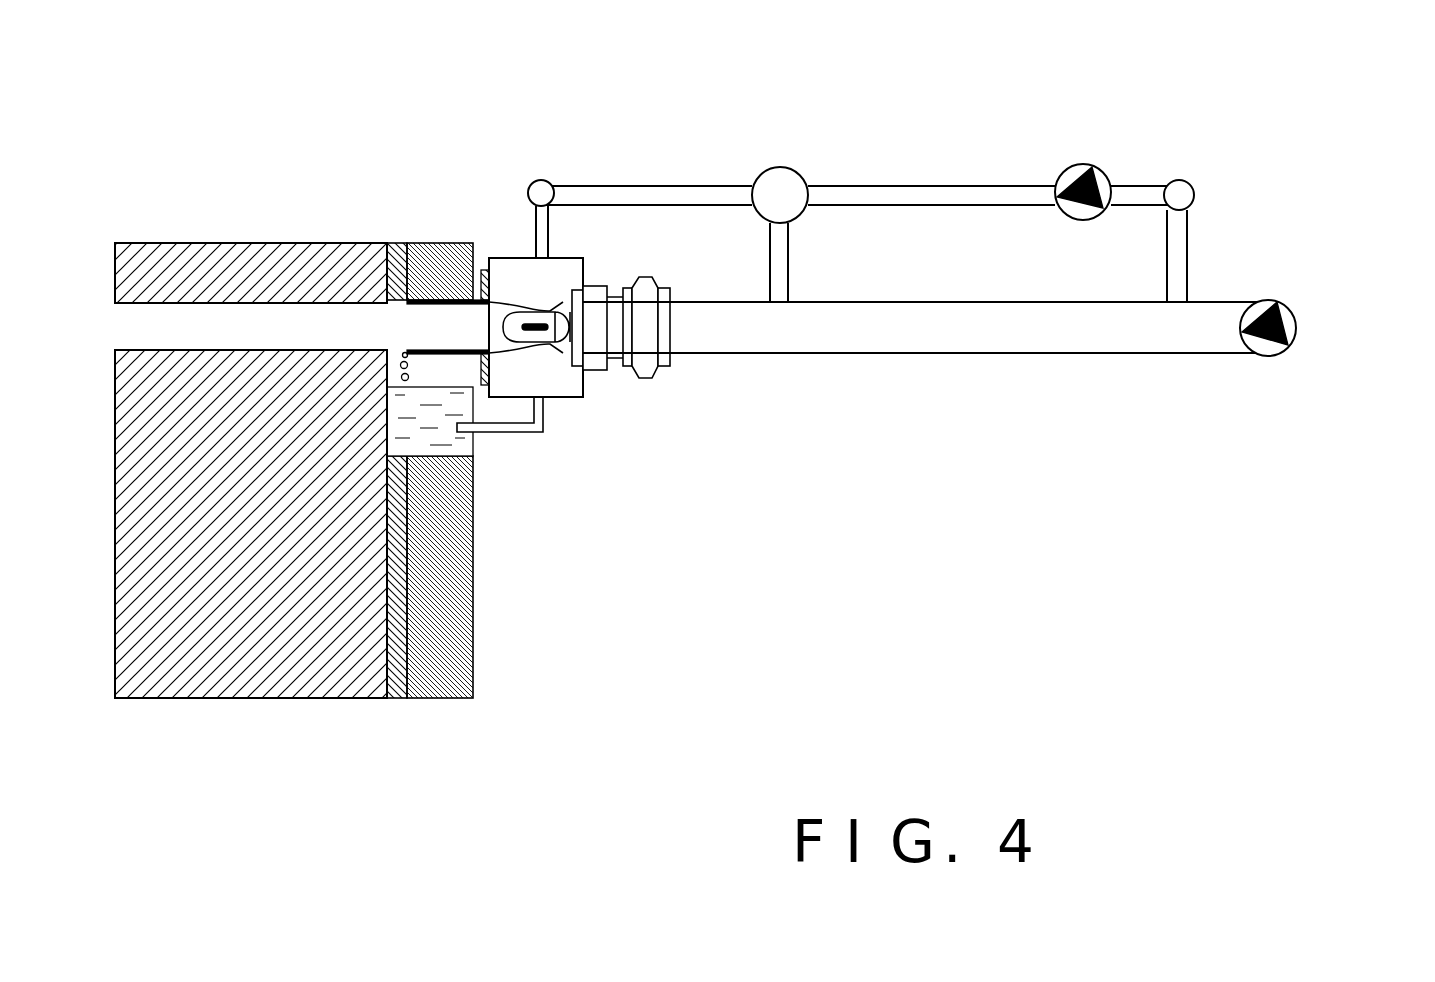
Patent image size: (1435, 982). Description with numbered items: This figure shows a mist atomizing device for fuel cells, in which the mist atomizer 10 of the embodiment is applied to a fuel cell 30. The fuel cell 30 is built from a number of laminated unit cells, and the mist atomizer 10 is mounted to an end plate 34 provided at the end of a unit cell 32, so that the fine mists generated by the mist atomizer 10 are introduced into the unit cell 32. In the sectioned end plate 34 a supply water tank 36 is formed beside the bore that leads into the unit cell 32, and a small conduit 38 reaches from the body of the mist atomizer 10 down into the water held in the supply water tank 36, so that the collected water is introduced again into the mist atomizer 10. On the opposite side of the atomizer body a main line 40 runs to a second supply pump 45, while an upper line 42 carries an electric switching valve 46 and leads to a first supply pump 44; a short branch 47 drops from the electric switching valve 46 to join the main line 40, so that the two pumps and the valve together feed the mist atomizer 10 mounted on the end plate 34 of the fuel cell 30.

The mist atomizer 10 is at (648, 390).
The fuel cell 30 is at (372, 544).
The unit cell 32 is at (338, 683).
The end plate 34 is at (457, 610).
The supply water tank 36 is at (437, 437).
The suction tube 38 is at (543, 432).
The first supply pipe 40 is at (822, 355).
The second supply pipe 42 is at (907, 186).
The first supply pump 44 is at (1278, 112).
The second supply pump 45 is at (1287, 400).
The electric switching valve 46 is at (810, 77).
The branch pipe 47 is at (768, 257).